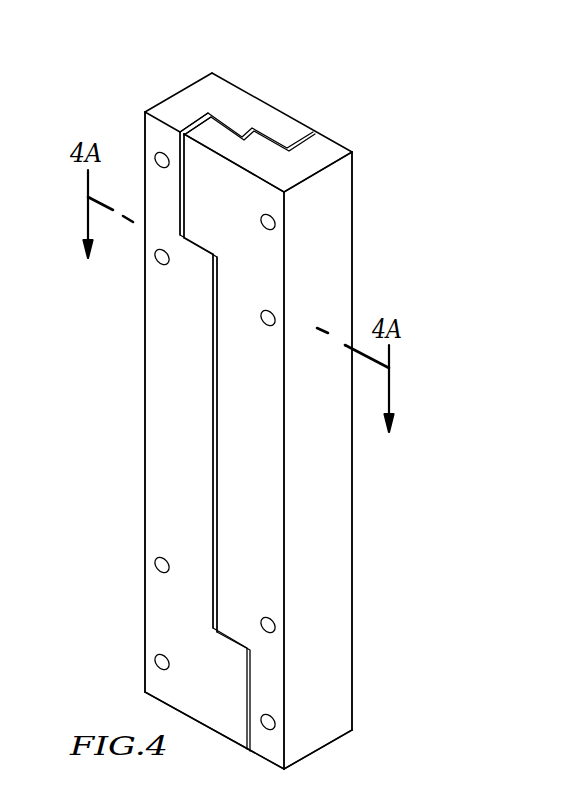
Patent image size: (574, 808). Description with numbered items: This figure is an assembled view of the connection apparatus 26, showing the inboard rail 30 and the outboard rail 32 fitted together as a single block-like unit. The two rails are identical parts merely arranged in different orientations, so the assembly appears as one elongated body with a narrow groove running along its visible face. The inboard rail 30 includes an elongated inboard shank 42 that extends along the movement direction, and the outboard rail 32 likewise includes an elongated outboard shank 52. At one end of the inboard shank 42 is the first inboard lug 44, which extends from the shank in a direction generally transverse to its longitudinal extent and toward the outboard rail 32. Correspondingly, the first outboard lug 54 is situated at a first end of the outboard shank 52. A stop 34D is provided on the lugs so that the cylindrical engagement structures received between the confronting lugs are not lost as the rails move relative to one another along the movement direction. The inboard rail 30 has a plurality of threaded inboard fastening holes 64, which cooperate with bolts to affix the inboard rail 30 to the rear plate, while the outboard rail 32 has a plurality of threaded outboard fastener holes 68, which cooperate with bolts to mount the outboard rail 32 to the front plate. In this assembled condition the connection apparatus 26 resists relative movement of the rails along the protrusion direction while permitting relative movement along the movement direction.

The connection apparatus 26 is at (291, 73).
The inboard rail 30 is at (329, 542).
The outboard rail 32 is at (134, 409).
The stop 34D is at (283, 137).
The inboard shank 42 is at (213, 447).
The first inboard lug 44 is at (213, 132).
The outboard shank 52 is at (213, 322).
The first outboard lug 54 is at (283, 127).
The inboard fastening holes 64 is at (264, 226).
The outboard fastener holes 68 is at (163, 168).